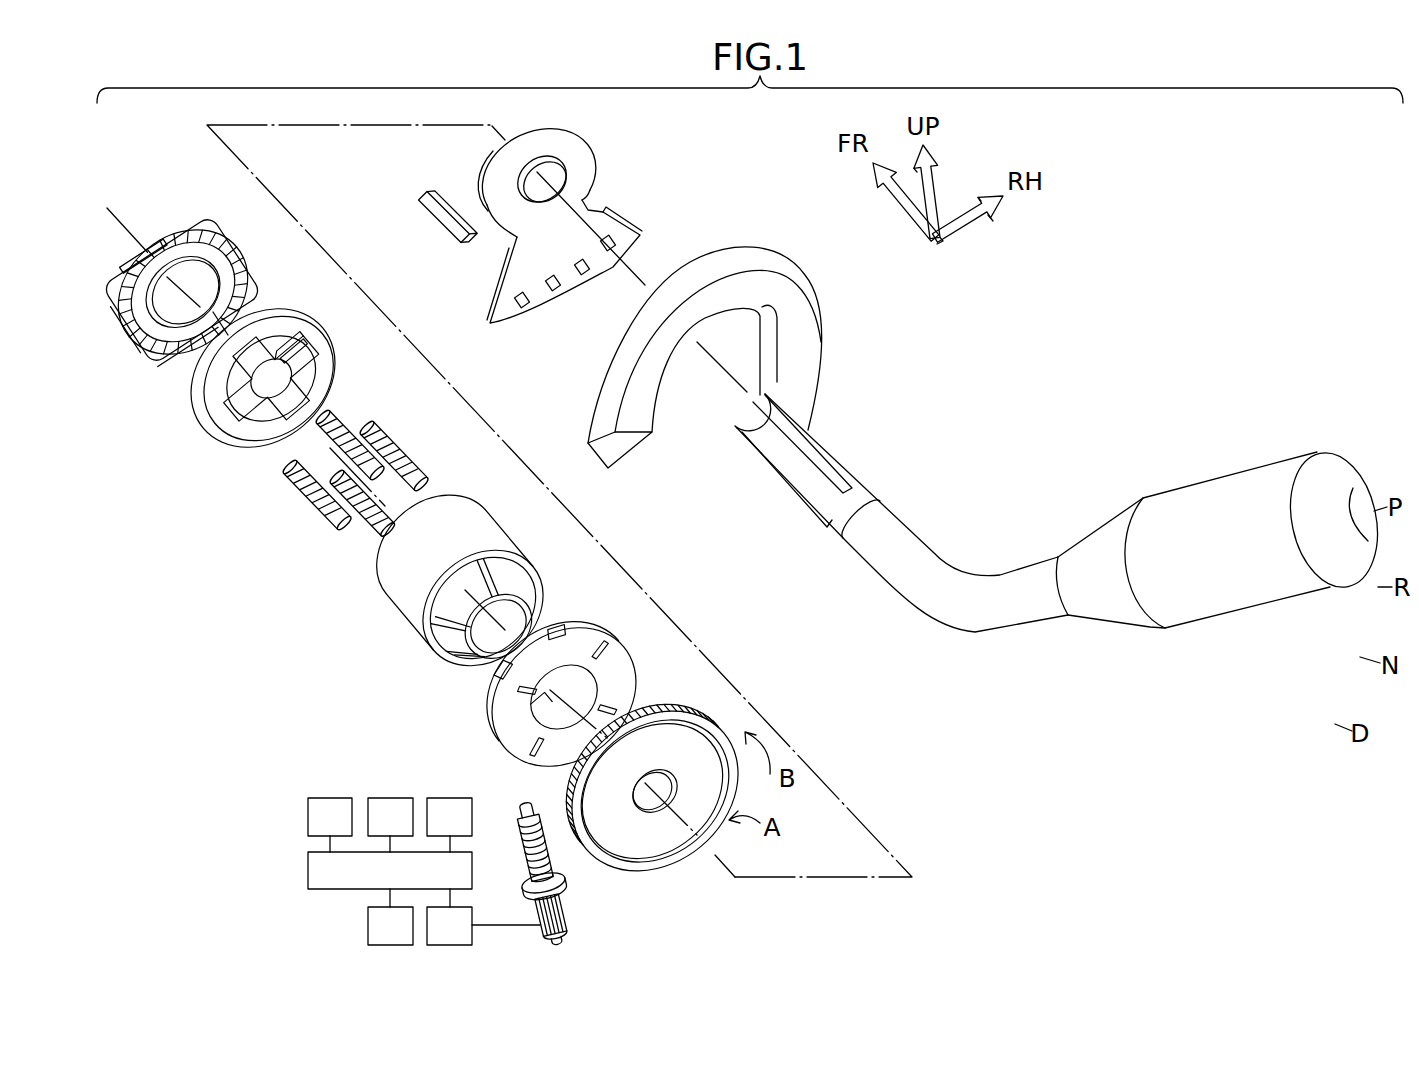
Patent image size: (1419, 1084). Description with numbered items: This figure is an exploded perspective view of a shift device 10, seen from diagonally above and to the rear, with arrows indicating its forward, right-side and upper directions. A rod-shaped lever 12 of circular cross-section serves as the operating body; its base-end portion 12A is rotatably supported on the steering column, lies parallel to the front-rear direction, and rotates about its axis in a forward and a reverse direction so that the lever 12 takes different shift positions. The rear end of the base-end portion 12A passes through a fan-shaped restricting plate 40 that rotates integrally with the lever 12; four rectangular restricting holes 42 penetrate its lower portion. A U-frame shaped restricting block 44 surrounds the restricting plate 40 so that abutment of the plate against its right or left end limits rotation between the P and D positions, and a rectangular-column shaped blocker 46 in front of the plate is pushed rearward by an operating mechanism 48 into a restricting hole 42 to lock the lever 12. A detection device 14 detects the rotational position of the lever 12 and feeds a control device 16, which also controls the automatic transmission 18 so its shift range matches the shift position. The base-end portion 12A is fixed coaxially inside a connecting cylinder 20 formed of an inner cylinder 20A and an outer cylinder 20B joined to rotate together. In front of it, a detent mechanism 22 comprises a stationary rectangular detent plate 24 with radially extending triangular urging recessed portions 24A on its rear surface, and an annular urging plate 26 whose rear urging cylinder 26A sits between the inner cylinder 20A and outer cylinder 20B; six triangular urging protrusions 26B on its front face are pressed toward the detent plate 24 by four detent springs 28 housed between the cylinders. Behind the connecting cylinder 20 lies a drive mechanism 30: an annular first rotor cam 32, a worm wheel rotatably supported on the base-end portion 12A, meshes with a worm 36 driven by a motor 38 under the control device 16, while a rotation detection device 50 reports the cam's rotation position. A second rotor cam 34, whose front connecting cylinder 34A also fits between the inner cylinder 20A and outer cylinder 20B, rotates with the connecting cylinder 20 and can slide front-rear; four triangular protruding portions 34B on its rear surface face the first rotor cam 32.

The shift device 10 is at (1082, 442).
The lever 12 is at (1062, 512).
The base-end portion 12A is at (913, 524).
The detection device 14 is at (455, 797).
The control device 16 is at (308, 868).
The automatic transmission 18 is at (390, 798).
The connecting cylinder 20 is at (474, 580).
The inner cylinder 20A is at (510, 546).
The outer cylinder 20B is at (460, 580).
The detent mechanism 22 is at (282, 257).
The detent plate 24 is at (182, 314).
The urging recessed portions 24A is at (185, 347).
The urging plate 26 is at (282, 382).
The urging cylinder 26A is at (290, 349).
The urging protrusions 26B is at (263, 378).
The detent springs 28 is at (337, 424).
The drive mechanism 30 is at (637, 818).
The first rotor cam 32 is at (583, 793).
The second rotor cam 34 is at (545, 694).
The connecting cylinder 34A is at (530, 651).
The protruding portions 34B is at (569, 699).
The worm 36 is at (556, 866).
The motor 38 is at (472, 916).
The restricting plate 40 is at (584, 255).
The restricting holes 42 is at (618, 250).
The restricting block 44 is at (818, 300).
The blocker 46 is at (422, 208).
The operating mechanism 48 is at (330, 798).
The rotation detection device 50 is at (368, 925).